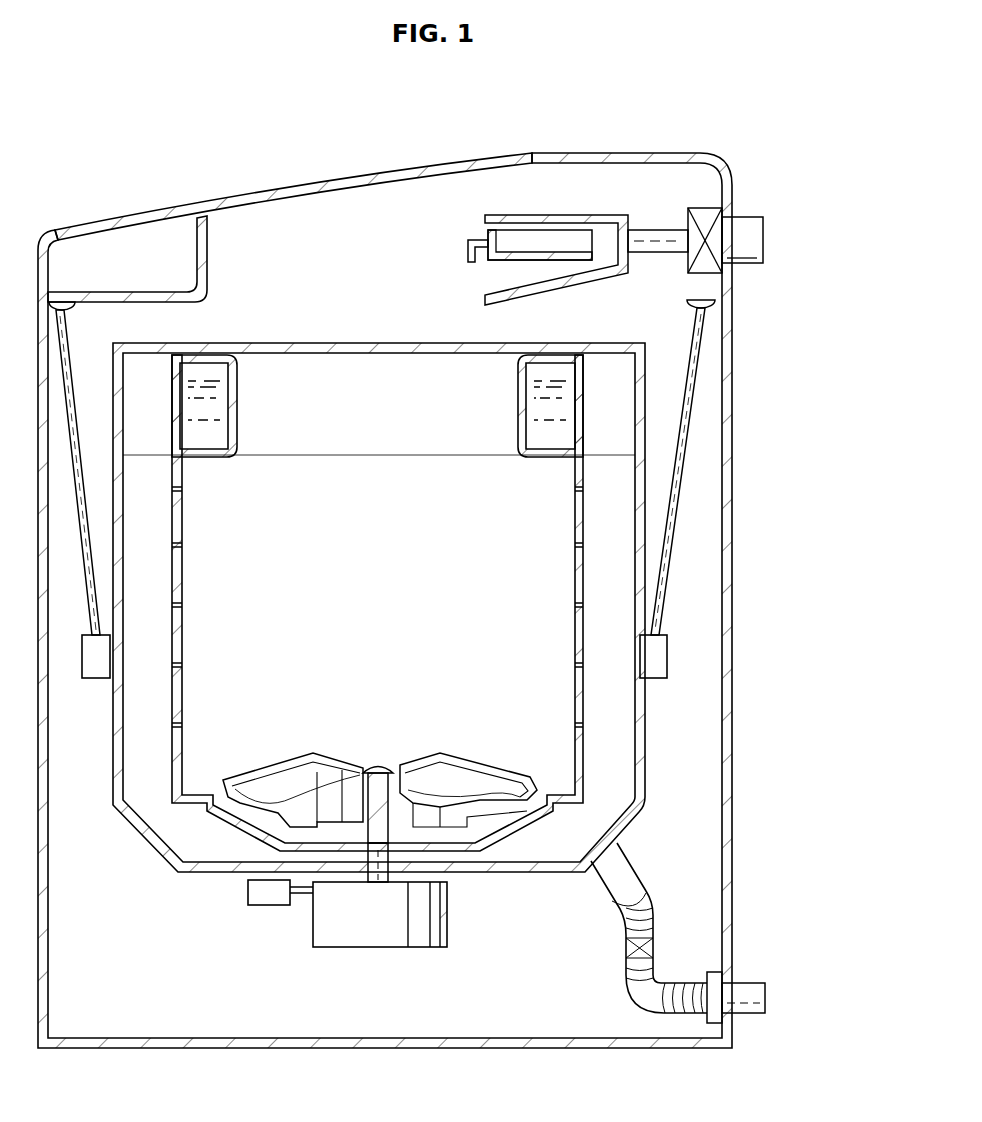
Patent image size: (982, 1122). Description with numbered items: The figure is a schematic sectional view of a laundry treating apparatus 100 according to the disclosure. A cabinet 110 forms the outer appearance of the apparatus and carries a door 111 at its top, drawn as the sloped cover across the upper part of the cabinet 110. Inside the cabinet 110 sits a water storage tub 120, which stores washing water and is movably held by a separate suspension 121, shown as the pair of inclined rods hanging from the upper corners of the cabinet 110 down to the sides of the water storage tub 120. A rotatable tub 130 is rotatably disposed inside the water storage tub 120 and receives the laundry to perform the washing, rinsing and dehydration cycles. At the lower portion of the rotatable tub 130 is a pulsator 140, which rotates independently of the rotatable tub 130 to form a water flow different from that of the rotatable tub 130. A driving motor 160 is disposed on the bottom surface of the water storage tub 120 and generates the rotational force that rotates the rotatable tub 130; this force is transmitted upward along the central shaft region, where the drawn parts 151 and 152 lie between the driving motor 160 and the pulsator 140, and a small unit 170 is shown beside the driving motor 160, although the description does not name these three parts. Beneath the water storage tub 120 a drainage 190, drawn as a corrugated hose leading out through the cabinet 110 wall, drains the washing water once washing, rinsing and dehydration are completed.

The laundry treating apparatus 100 is at (77, 113).
The cabinet 110 is at (742, 174).
The door 111 is at (386, 174).
The water storage tub 120 is at (640, 211).
The suspension 121 is at (686, 452).
The rotatable tub 130 is at (597, 517).
The pulsator 140 is at (528, 762).
The washing shaft 151 is at (378, 767).
The driving shaft 152 is at (383, 878).
The driving motor 160 is at (455, 938).
The clutch 170 is at (358, 855).
The drainage 190 is at (652, 897).